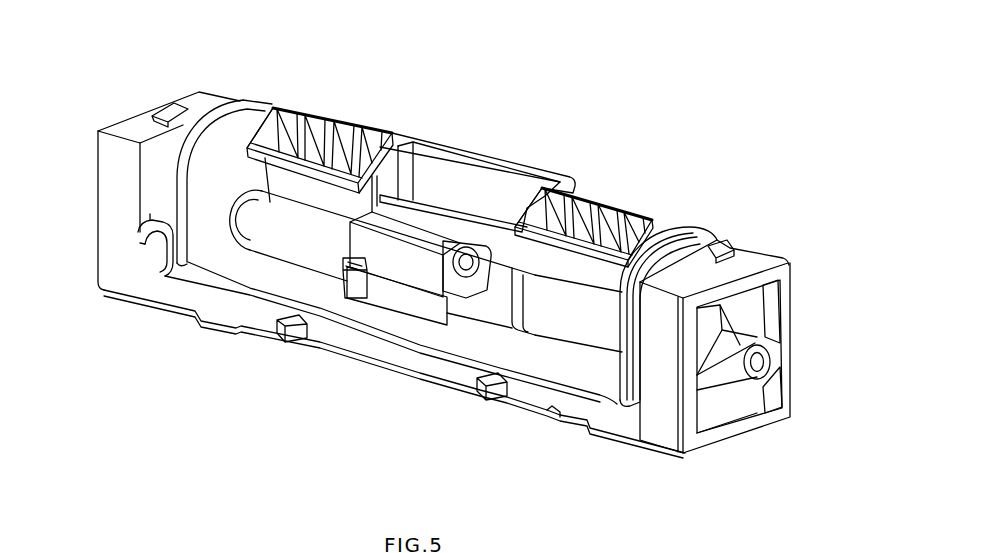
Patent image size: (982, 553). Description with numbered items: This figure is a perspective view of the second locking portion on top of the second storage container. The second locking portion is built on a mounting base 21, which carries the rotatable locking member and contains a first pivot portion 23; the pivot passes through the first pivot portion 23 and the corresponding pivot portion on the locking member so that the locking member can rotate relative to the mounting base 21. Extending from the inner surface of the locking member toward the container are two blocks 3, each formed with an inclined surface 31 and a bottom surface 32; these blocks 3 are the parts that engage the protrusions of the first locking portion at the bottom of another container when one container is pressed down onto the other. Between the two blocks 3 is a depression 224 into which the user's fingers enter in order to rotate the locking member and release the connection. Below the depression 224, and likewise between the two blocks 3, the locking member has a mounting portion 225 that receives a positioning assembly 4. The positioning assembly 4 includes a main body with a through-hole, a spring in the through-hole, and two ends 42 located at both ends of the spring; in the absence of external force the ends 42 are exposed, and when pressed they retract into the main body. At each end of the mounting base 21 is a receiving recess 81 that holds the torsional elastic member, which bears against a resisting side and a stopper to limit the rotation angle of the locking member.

The block 3 is at (607, 202).
The inclined surface 31 is at (327, 123).
The depression 224 is at (480, 190).
The mounting portion 225 is at (383, 290).
The mounting base 21 is at (290, 285).
The first pivot portion 23 is at (498, 320).
The bottom surface 32 is at (364, 222).
The positioning assembly 4 is at (408, 247).
The end 42 is at (470, 278).
The receiving recess 81 is at (168, 185).